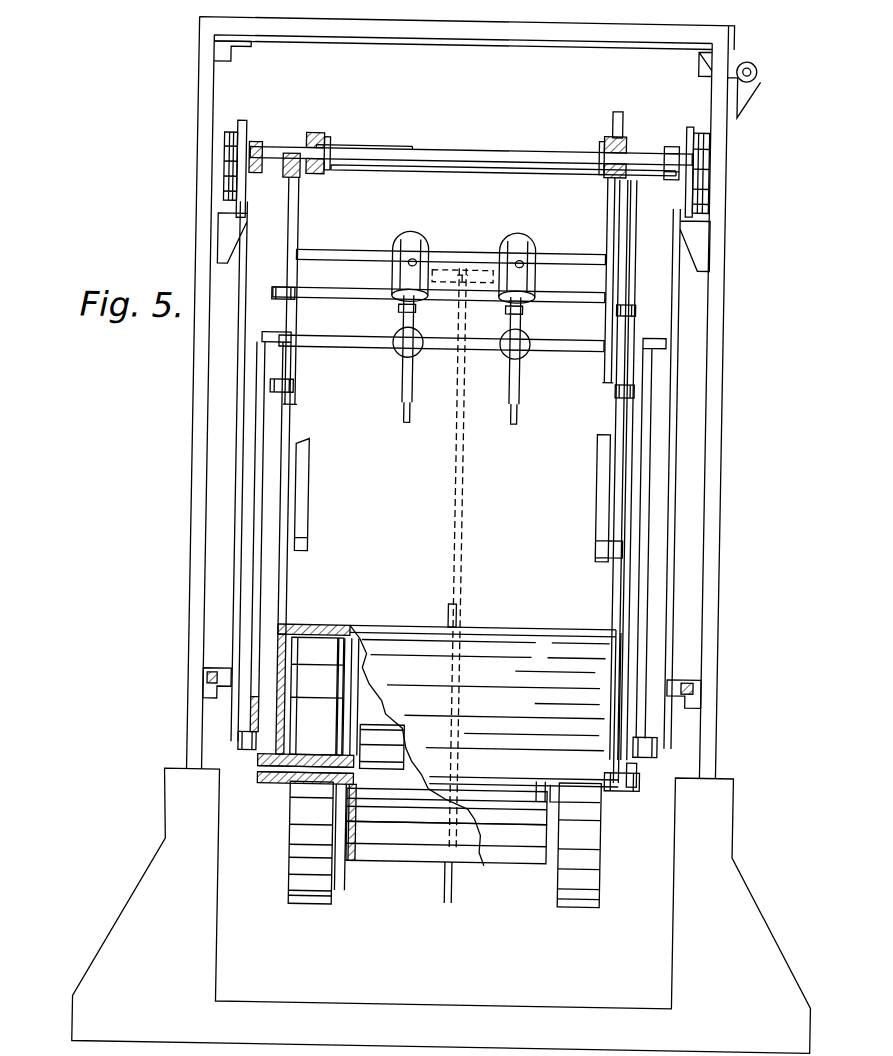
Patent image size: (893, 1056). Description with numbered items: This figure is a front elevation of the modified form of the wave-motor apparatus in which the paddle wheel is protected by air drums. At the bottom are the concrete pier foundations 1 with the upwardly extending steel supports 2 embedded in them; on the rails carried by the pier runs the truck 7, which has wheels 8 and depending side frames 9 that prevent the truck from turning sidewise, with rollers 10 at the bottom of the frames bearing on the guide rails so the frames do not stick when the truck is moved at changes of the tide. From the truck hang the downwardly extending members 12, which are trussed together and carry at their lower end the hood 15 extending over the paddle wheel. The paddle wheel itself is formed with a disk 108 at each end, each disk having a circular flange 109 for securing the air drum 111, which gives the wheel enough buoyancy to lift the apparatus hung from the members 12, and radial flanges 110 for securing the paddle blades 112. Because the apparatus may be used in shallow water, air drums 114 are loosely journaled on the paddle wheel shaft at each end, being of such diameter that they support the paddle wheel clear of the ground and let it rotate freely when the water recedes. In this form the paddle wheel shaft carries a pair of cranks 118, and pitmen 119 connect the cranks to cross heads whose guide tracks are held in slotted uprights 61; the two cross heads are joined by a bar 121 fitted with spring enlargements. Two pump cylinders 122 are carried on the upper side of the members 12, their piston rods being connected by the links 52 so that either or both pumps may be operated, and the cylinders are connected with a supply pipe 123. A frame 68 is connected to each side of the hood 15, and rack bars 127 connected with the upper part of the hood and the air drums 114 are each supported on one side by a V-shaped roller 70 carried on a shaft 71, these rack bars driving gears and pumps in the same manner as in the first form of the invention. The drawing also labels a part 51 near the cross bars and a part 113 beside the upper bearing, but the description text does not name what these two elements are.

The pier foundations 1 is at (150, 900).
The steel supports 2 is at (193, 640).
The truck 7 is at (260, 150).
The wheels 8 is at (236, 142).
The side frames 9 is at (237, 524).
The rollers 10 is at (221, 672).
The downwardly extending members 12 is at (297, 230).
The hood 15 is at (500, 643).
The clamp 51 is at (283, 320).
The links 52 is at (512, 389).
The slotted uprights 61 is at (775, 47).
The frame 68 is at (286, 594).
The roller 70 is at (322, 146).
The shaft 71 is at (388, 149).
The disk 108 is at (346, 864).
The circular flange 109 is at (370, 719).
The radial flanges 110 is at (356, 837).
The air drum 111 is at (381, 813).
The paddle blades 112 is at (418, 853).
The bracket 113 is at (738, 95).
The air drums 114 is at (301, 864).
The cranks 118 is at (262, 758).
The pitmen 119 is at (257, 698).
The bar 121 is at (347, 346).
The pump cylinders 122 is at (514, 243).
The supply pipe 123 is at (454, 883).
The rack bars 127 is at (308, 478).